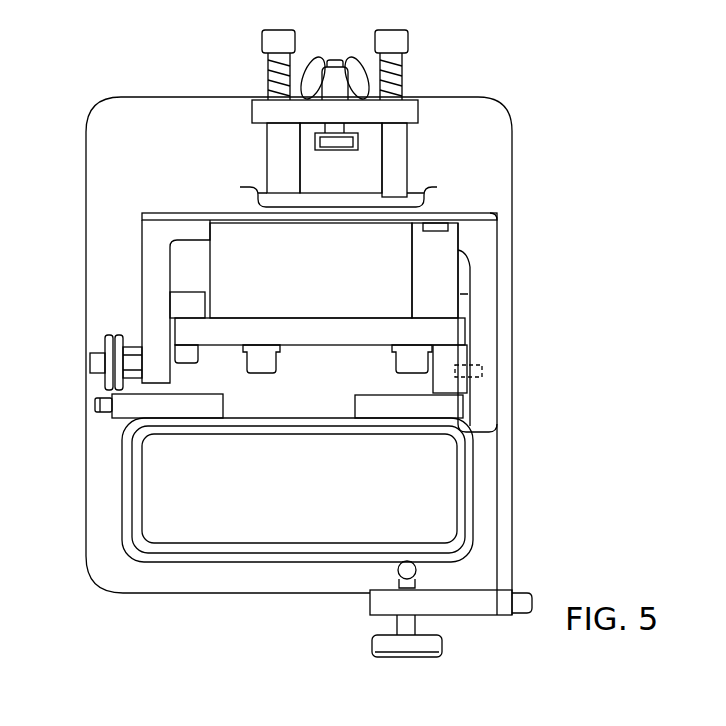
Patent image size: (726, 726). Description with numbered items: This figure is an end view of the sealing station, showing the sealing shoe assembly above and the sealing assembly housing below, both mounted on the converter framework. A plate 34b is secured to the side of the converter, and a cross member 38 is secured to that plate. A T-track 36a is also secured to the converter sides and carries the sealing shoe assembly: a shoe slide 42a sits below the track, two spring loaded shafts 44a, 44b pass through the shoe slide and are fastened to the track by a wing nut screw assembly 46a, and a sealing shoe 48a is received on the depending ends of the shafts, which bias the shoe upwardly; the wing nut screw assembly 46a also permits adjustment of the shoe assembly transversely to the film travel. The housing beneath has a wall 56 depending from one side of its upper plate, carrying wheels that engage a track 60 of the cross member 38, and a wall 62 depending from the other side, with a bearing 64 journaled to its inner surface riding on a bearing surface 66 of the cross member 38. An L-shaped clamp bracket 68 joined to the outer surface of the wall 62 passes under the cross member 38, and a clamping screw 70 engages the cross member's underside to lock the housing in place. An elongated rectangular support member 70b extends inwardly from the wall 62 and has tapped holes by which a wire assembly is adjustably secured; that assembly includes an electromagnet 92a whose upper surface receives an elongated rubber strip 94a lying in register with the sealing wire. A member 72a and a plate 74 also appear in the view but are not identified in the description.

The plate 34b is at (483, 100).
The T-track 36a is at (321, 183).
The cross member 38 is at (125, 518).
The shoe slide 42a is at (412, 108).
The spring loaded shaft 44a is at (405, 151).
The spring loaded shaft 44b is at (270, 149).
The wing nut screw assembly 46a is at (334, 58).
The sealing shoe 48a is at (418, 188).
The wall 56 is at (142, 237).
The track 60 is at (106, 403).
The wall 62 is at (502, 327).
The bearing 64 is at (456, 378).
The bearing surface 66 is at (437, 407).
The L-shaped clamp bracket 68 is at (507, 552).
The clamping screw 70 is at (368, 623).
The support member 70b is at (178, 300).
The support block 72a is at (343, 340).
The mounting plate 74 is at (463, 313).
The electromagnet 92a is at (302, 277).
The rubber strip 94a is at (432, 224).